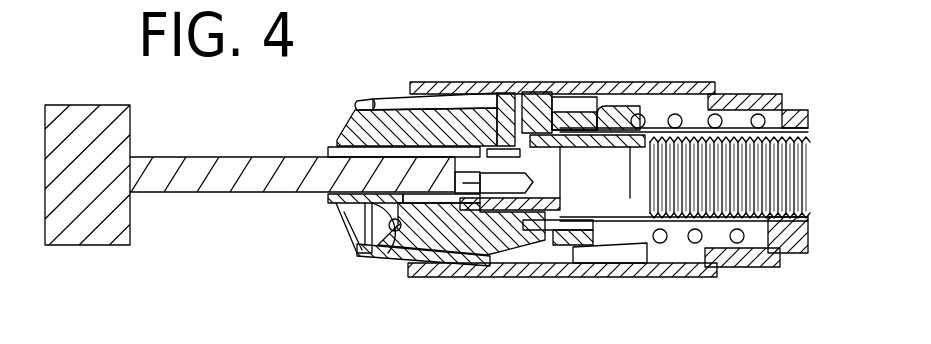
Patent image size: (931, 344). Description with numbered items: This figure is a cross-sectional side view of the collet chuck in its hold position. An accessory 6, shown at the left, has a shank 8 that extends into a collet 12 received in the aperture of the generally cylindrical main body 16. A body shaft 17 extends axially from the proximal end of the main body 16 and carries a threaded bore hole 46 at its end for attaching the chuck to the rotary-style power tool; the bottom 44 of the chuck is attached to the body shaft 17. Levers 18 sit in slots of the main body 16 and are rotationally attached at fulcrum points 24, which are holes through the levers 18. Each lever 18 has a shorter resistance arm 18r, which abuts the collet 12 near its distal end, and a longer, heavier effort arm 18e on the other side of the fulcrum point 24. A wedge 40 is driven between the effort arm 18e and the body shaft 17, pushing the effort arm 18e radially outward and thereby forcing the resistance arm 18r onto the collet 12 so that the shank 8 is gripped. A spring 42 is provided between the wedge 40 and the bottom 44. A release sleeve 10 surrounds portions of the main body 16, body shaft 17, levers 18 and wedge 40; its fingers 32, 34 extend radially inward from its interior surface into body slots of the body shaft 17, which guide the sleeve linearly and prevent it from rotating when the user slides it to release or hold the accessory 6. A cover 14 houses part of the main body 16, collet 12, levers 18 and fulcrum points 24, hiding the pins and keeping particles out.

The accessory 6 is at (95, 105).
The shank 8 is at (205, 157).
The release sleeve 10 is at (445, 83).
The collet 12 is at (330, 203).
The cover 14 is at (375, 100).
The main body 16 is at (405, 118).
The body shaft 17 is at (760, 222).
The lever 18 is at (495, 268).
The resistance arm 18r is at (368, 230).
The effort arm 18e is at (610, 265).
The fulcrum point 24 is at (390, 232).
The finger 32 is at (598, 103).
The finger 34 is at (533, 110).
The wedge 40 is at (568, 125).
The spring 42 is at (680, 114).
The bottom 44 is at (770, 92).
The threaded bore hole 46 is at (800, 155).